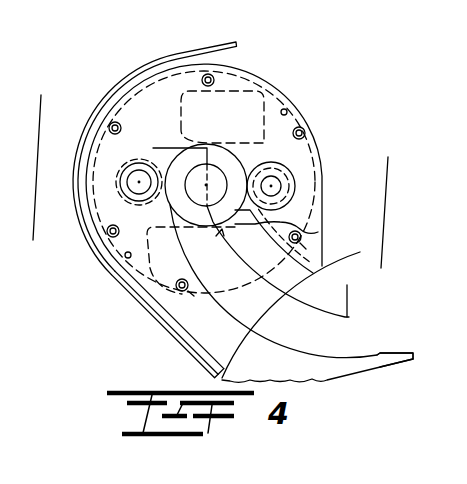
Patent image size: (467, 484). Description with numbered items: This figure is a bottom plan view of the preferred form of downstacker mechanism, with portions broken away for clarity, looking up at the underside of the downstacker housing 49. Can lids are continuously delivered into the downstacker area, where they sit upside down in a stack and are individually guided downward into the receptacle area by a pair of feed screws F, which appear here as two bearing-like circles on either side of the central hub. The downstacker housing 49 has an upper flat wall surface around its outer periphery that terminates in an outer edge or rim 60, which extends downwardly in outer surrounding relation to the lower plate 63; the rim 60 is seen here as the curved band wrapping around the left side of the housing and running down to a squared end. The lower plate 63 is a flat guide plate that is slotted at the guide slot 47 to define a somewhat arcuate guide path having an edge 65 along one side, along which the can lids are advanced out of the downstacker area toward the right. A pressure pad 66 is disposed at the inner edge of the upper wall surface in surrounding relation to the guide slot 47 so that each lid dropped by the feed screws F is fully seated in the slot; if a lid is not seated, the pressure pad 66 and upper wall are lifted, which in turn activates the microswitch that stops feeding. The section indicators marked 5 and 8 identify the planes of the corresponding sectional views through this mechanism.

The guide slot 47 is at (330, 333).
The downstacker housing 49 is at (149, 273).
The rim 60 is at (162, 328).
The lower plate 63 is at (345, 370).
The edge 65 is at (380, 351).
The pressure pad 66 is at (318, 232).
The feed screws F is at (116, 182).
The section line 8- 8 is at (243, 227).
The section line 5- 5 is at (212, 171).